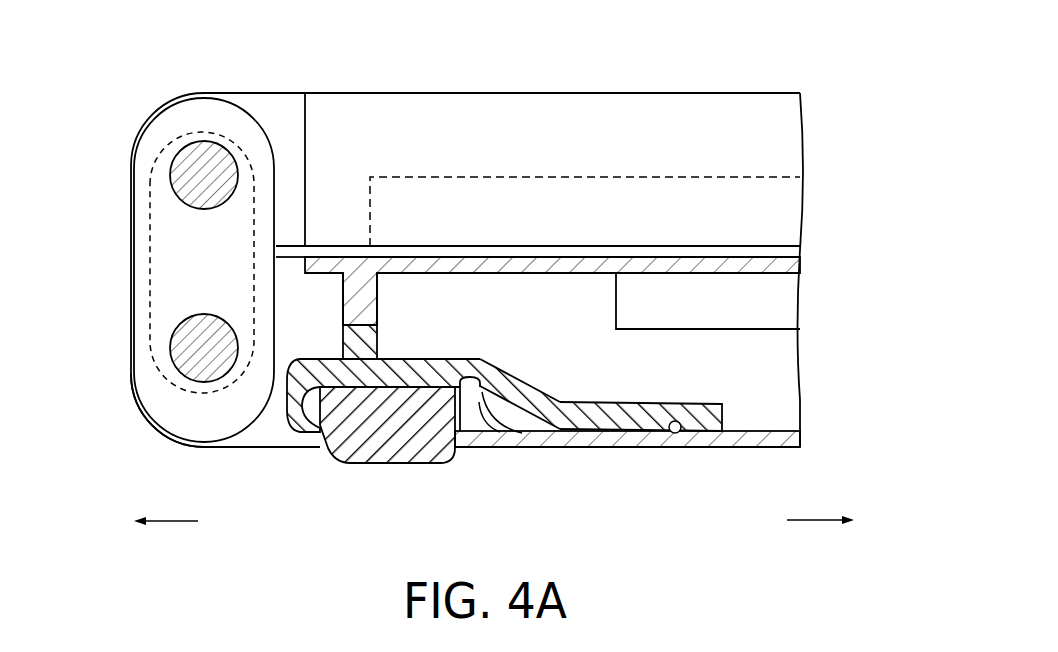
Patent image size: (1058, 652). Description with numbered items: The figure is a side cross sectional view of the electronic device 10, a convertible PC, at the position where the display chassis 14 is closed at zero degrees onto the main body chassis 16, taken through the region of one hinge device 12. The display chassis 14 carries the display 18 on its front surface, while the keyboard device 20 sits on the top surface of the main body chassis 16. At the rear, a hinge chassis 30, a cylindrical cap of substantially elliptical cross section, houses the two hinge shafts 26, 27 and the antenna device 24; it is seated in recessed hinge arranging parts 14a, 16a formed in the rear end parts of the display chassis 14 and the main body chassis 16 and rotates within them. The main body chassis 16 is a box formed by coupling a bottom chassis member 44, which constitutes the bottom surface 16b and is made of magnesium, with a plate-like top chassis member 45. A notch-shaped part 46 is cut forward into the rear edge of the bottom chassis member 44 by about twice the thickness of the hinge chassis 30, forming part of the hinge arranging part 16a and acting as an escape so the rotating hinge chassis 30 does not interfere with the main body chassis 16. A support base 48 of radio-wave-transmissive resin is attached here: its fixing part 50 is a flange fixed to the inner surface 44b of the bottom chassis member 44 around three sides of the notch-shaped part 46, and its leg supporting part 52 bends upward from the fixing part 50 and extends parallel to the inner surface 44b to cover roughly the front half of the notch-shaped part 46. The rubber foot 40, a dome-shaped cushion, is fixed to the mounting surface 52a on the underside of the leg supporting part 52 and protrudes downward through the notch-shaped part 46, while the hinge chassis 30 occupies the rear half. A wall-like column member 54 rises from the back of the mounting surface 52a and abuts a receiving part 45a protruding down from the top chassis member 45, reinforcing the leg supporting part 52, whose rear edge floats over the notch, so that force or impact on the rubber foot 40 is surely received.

The electronic device 10 is at (45, 31).
The hinge device 12 is at (176, 89).
The display chassis 14 is at (678, 85).
The hinge arranging part 14a is at (288, 108).
The main body chassis 16 is at (757, 458).
The hinge arranging part 16a is at (272, 448).
The bottom surface 16b is at (630, 450).
The display 18 is at (773, 213).
The keyboard device 20 is at (788, 302).
The antenna device 24 is at (135, 268).
The hinge shaft 26 is at (188, 352).
The hinge shaft 27 is at (190, 170).
The hinge chassis 30 is at (170, 413).
The rubber foot 40 is at (361, 474).
The bottom chassis member 44 is at (758, 433).
The inner surface 44b is at (676, 435).
The top chassis member 45 is at (727, 266).
The receiving part 45a is at (362, 300).
The notch-shaped part 46 is at (470, 446).
The support base 48 is at (496, 358).
The fixing part 50 is at (560, 450).
The leg supporting part 52 is at (430, 358).
The mounting surface 52a is at (393, 388).
The column member 54 is at (362, 343).